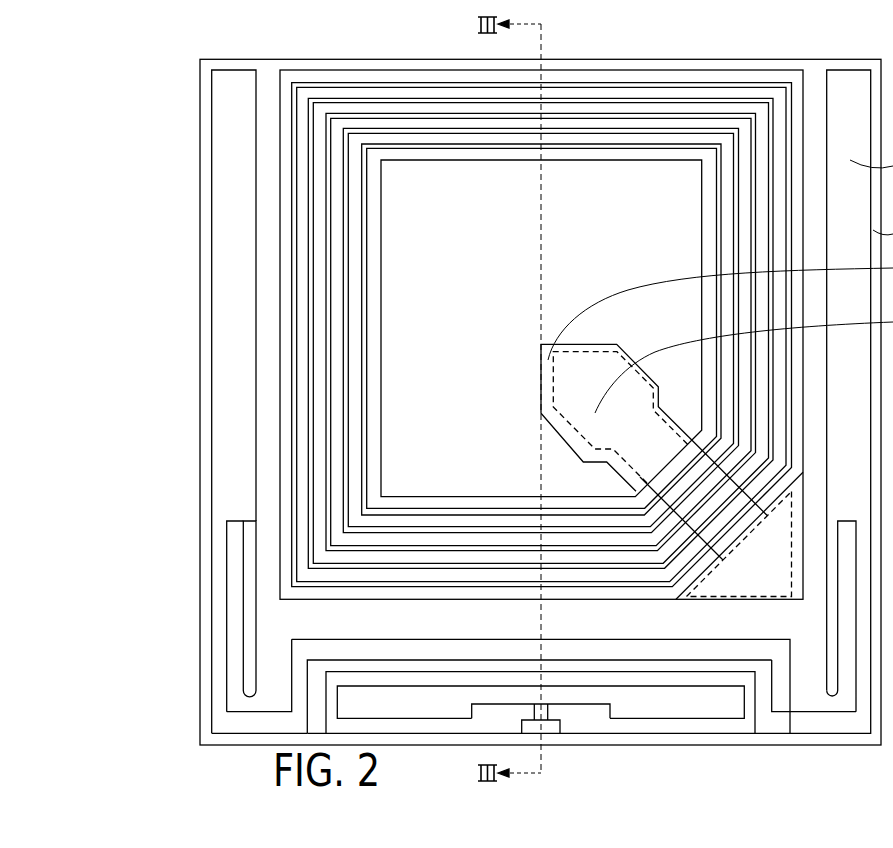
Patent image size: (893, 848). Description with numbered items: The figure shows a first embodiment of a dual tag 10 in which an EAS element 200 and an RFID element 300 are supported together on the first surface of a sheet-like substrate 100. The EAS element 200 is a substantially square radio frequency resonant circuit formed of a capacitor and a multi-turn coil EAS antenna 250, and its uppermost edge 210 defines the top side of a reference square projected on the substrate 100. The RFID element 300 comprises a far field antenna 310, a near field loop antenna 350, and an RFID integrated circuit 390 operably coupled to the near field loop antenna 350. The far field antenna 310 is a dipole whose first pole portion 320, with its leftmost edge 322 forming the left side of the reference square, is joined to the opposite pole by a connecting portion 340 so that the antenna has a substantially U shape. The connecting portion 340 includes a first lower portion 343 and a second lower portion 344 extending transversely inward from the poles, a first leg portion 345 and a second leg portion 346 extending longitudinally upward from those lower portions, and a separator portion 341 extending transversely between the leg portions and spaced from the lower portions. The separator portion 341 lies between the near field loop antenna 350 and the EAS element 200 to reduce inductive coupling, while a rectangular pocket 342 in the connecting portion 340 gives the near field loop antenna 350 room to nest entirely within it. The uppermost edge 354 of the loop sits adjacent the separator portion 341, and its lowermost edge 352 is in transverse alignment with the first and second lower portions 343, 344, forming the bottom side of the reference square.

The dual tag 10 is at (205, 38).
The substrate 100 is at (215, 82).
The EAS element 200 is at (358, 74).
The uppermost edge 210 is at (401, 71).
The EAS antenna 250 is at (740, 79).
The RFID element 300 is at (782, 720).
The far field antenna 310 is at (225, 122).
The first pole portion 320 is at (230, 165).
The leftmost edge 322 is at (213, 220).
The connecting portion 340 is at (293, 726).
The separator portion 341 is at (363, 648).
The pocket 342 is at (390, 660).
The first lower portion 343 is at (243, 725).
The second lower portion 344 is at (845, 720).
The first leg portion 345 is at (300, 694).
The second leg portion 346 is at (765, 687).
The near field loop antenna 350 is at (703, 726).
The lowermost edge 352 is at (662, 735).
The uppermost edge 354 is at (647, 672).
The RFID integrated circuit 390 is at (548, 710).